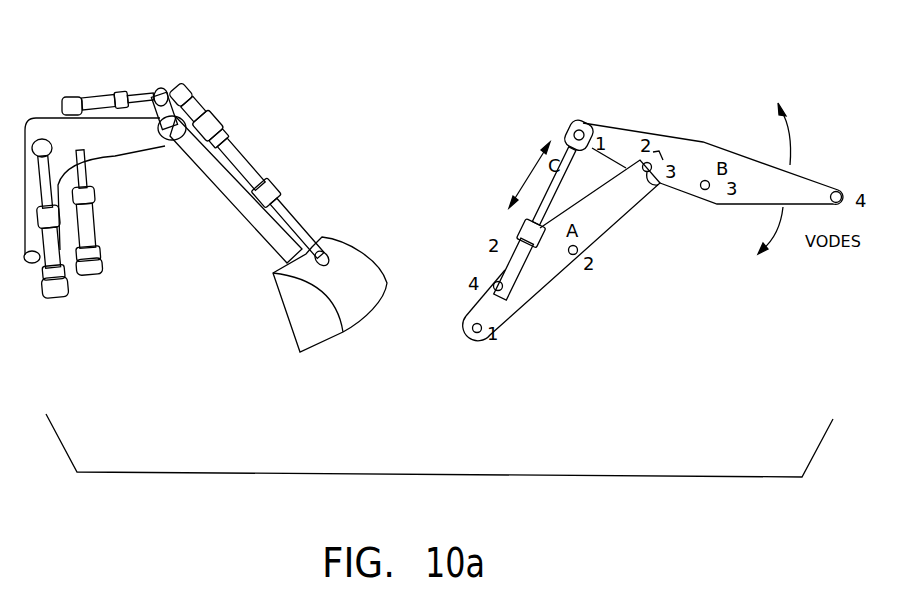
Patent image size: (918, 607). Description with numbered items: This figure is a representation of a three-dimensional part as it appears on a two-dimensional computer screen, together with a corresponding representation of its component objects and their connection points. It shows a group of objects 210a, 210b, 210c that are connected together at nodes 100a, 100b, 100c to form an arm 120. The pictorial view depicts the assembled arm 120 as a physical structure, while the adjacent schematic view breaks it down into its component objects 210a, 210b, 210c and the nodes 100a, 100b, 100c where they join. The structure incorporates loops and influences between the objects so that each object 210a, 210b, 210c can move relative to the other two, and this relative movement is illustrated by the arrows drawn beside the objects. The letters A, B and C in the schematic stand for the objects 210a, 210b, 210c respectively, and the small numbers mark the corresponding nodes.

The node 100a is at (140, 148).
The node 100b is at (163, 80).
The node 100c is at (64, 97).
The object 210a is at (100, 140).
The object 210b is at (223, 176).
The object 210c is at (112, 90).
The arm 120 is at (288, 230).